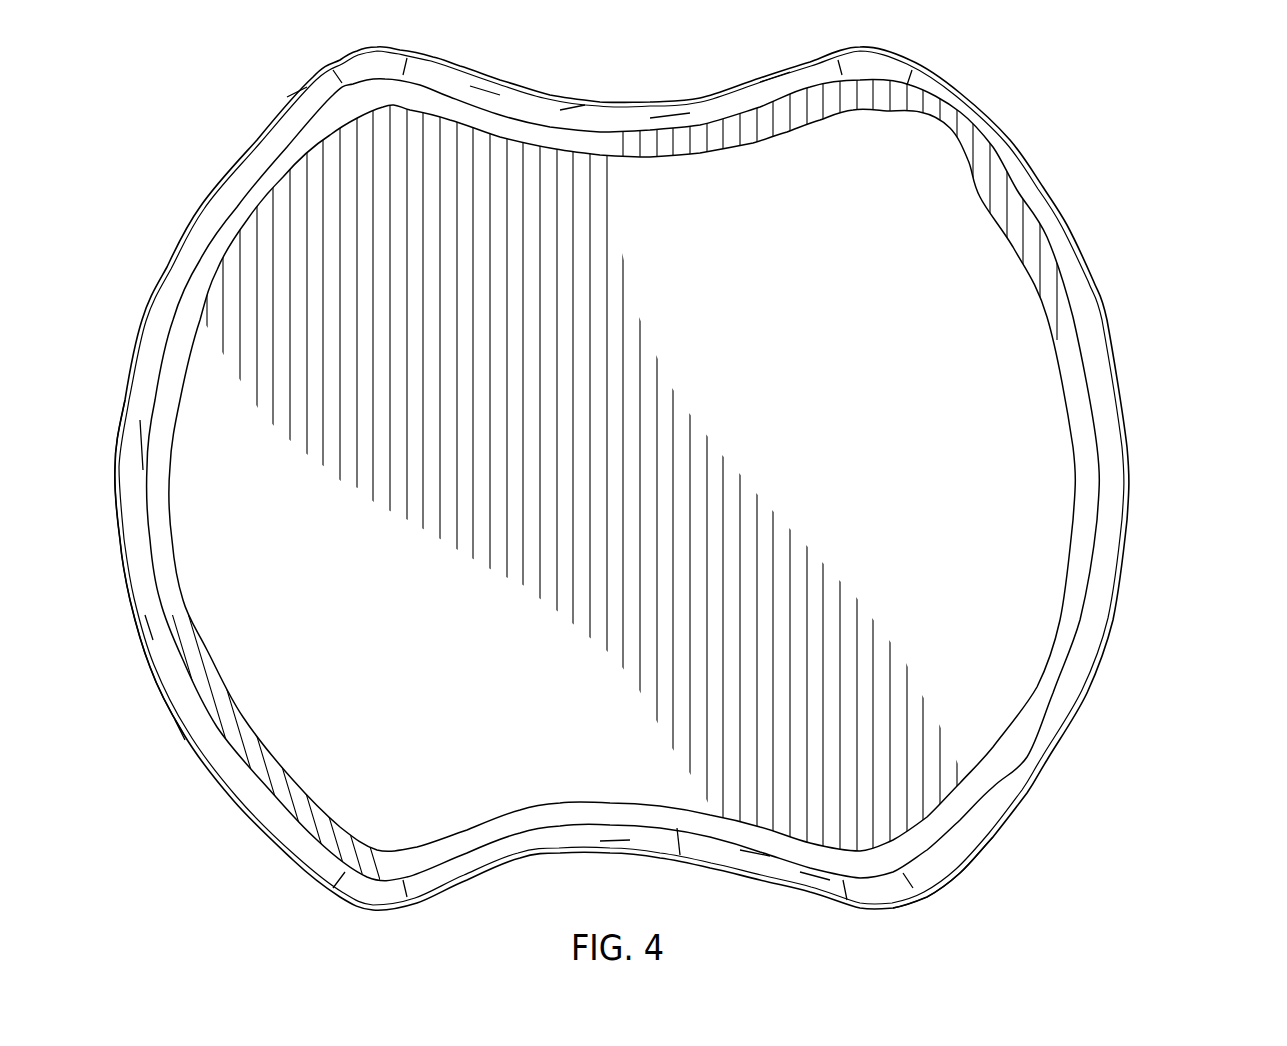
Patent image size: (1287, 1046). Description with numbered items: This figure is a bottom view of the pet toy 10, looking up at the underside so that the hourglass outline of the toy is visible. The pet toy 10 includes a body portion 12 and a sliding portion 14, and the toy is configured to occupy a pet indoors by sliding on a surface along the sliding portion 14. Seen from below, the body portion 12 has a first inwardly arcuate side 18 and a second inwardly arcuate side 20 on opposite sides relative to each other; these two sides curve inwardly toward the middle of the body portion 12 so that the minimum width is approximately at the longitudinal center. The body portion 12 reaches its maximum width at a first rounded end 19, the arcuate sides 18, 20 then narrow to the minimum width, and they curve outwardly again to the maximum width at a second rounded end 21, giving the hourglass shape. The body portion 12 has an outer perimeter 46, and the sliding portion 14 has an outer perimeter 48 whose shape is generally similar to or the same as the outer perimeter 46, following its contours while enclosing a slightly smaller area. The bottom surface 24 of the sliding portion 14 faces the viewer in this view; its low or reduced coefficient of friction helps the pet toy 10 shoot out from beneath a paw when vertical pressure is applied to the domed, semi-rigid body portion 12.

The pet toy 10 is at (653, 523).
The body portion 12 is at (1130, 542).
The sliding portion 14 is at (1017, 607).
The first inwardly arcuate side 18 is at (580, 855).
The first rounded end 19 is at (1107, 298).
The second inwardly arcuate side 20 is at (675, 98).
The second rounded end 21 is at (205, 770).
The bottom surface of the sliding portion 24 is at (980, 693).
The outer perimeter of the body portion 46 is at (870, 908).
The outer perimeter of the sliding portion 48 is at (680, 857).